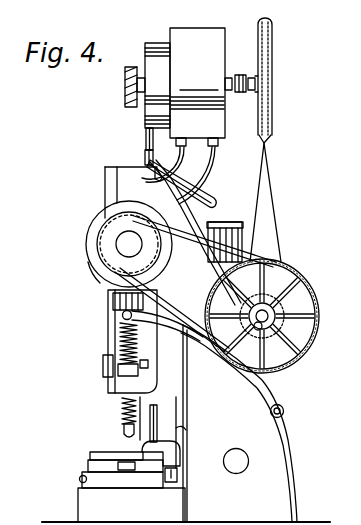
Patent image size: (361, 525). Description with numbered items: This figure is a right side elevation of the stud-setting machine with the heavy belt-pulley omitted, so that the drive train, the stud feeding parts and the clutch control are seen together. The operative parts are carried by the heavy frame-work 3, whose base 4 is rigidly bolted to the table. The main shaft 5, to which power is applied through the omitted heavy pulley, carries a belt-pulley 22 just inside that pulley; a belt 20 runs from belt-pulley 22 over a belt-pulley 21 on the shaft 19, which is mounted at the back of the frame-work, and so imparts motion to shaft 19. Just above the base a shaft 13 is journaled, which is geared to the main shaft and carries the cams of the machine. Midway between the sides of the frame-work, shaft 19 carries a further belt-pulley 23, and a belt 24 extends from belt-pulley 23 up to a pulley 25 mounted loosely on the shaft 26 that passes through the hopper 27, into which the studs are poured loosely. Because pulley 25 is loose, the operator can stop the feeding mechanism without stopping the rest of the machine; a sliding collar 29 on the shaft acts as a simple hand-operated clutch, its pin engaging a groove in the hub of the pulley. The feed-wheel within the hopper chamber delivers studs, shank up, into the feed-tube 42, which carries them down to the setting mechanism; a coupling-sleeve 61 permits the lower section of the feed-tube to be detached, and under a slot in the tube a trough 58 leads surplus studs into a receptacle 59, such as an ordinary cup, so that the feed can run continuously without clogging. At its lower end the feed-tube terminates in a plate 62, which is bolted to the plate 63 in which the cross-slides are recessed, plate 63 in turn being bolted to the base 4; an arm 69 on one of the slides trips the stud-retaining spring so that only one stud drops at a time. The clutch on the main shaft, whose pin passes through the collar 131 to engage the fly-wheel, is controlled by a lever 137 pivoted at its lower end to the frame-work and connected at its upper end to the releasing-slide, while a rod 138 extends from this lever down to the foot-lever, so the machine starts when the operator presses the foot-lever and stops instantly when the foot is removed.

The frame-work 3 is at (133, 192).
The base 4 is at (131, 505).
The main shaft 5 is at (123, 240).
The shaft 13 is at (244, 469).
The shaft 19 is at (270, 322).
The belt 20 is at (168, 312).
The belt-pulley 21 is at (292, 360).
The belt-pulley 22 is at (100, 253).
The belt-pulley 23 is at (248, 324).
The belt 24 is at (274, 190).
The pulley 25 is at (273, 80).
The shaft 26 is at (232, 92).
The hopper 27 is at (175, 87).
The sliding collar 29 is at (241, 75).
The feed-tube 42 is at (148, 157).
The trough 58 is at (210, 200).
The receptacle 59 is at (212, 252).
The coupling-sleeve 61 is at (146, 140).
The plate 62 is at (168, 447).
The plate 63 is at (116, 478).
The arm 69 is at (180, 430).
The collar 131 is at (103, 273).
The lever 137 is at (258, 387).
The rod 138 is at (188, 494).